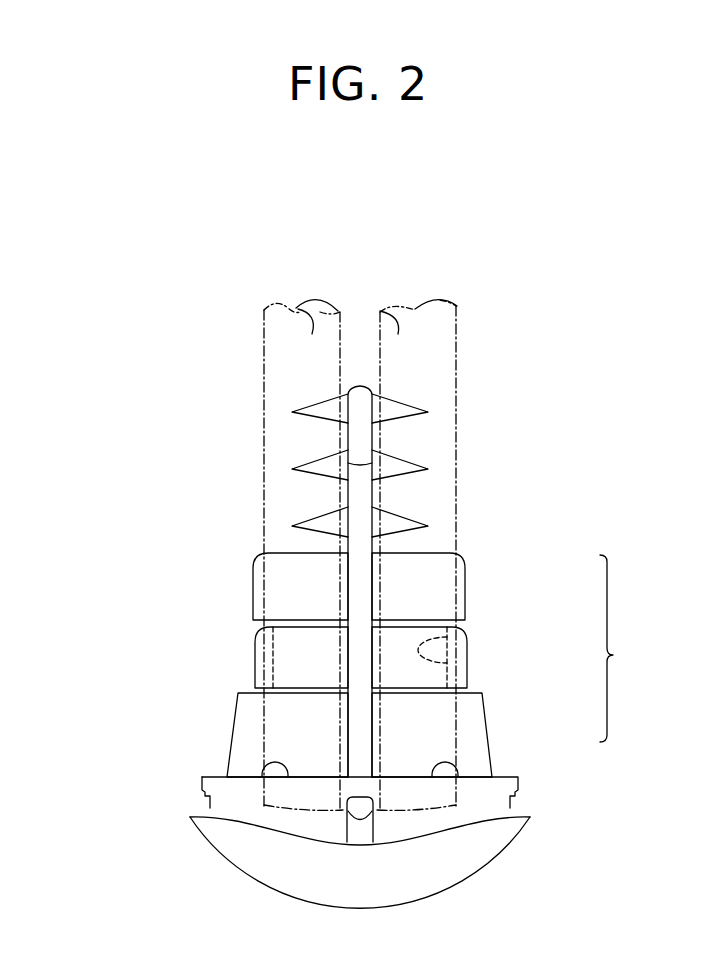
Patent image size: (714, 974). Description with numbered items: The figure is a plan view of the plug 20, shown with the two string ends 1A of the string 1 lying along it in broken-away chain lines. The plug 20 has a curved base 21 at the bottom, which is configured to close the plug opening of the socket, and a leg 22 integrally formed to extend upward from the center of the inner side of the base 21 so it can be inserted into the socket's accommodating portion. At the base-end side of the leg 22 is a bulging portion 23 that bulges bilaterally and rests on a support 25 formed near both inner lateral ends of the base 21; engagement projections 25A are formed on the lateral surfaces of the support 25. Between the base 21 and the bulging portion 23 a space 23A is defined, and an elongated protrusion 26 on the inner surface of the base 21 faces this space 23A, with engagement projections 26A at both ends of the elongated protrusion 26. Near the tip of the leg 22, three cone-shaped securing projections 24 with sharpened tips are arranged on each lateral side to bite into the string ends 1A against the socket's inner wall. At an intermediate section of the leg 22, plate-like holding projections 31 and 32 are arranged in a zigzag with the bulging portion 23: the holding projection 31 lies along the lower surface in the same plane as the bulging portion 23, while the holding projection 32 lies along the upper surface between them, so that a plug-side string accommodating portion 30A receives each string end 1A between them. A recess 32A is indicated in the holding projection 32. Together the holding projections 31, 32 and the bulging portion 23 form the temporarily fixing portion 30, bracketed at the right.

The string 1 is at (435, 266).
The string ends 1A is at (387, 307).
The plug 20 is at (148, 876).
The base 21 is at (260, 883).
The leg 22 is at (363, 389).
The bulging portion 23 is at (493, 722).
The space 23A is at (427, 795).
The securing projections 24 is at (312, 458).
The support 25 is at (515, 805).
The engagement projections 25A is at (518, 783).
The elongated protrusion 26 is at (360, 835).
The engagement projections 26A is at (355, 815).
The temporarily fixing portion 30 is at (621, 648).
The plug-side string accommodating portion 30A is at (418, 595).
The holding projection 31 is at (465, 575).
The holding projection 32 is at (467, 665).
The middle block recess 32A is at (447, 637).